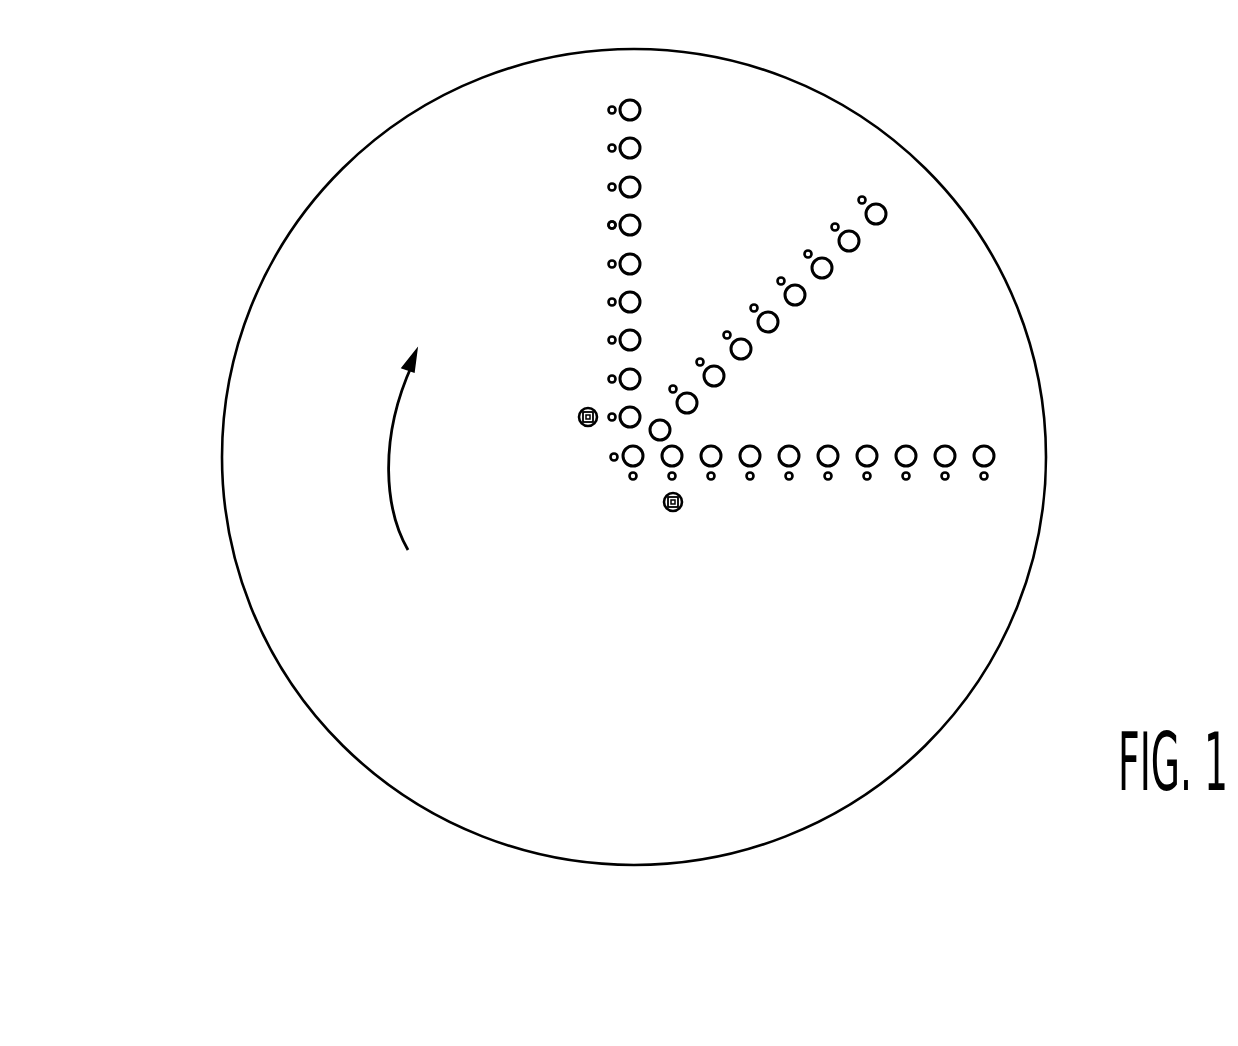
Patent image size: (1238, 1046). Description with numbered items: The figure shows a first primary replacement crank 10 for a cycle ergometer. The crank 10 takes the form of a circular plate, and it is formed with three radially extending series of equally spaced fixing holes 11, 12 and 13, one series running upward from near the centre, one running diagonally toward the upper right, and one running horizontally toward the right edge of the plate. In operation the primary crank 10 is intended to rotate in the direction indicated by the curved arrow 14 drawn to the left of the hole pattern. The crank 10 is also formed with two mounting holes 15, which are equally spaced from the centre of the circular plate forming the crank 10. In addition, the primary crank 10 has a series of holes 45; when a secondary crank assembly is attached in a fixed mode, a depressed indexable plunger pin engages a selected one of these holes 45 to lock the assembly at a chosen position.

The first primary replacement crank 10 is at (306, 655).
The fixing holes 11 is at (640, 100).
The fixing holes 12 is at (888, 200).
The fixing holes 13 is at (996, 453).
The arrow 14 is at (392, 497).
The mounting holes 15 is at (580, 421).
The series of holes 45 is at (607, 222).